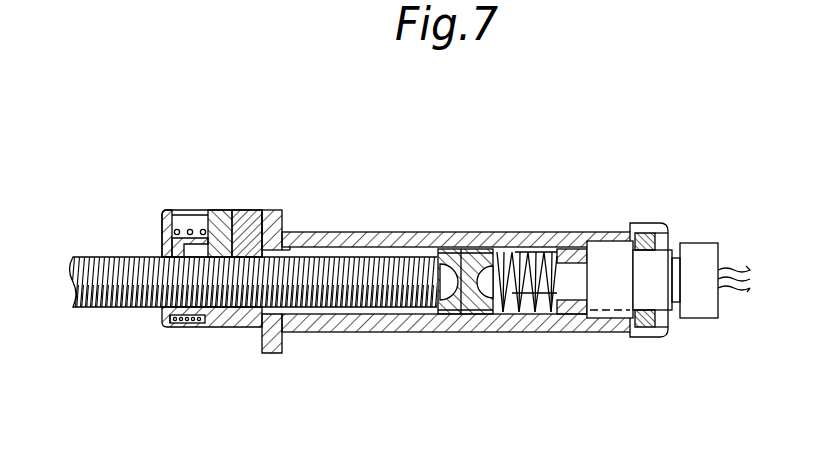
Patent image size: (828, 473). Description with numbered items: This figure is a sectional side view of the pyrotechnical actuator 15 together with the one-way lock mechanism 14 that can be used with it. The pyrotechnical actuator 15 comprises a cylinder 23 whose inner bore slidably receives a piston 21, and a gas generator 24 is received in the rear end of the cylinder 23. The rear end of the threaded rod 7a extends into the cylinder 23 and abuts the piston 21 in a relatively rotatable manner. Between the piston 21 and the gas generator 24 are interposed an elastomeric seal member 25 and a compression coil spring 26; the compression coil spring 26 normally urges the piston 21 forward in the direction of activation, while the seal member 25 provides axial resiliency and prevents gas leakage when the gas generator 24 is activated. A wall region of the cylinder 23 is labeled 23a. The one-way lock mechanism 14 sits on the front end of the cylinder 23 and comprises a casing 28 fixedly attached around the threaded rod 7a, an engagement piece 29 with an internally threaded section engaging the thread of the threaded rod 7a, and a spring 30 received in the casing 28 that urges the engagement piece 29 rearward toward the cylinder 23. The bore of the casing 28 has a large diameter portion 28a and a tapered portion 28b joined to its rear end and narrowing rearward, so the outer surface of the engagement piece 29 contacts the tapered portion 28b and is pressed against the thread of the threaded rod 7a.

The threaded rod 7a is at (100, 262).
The one-way lock mechanism 14 is at (182, 342).
The pyrotechnical actuator 15 is at (419, 136).
The piston 21 is at (447, 314).
The cylinder 23 is at (448, 232).
The tube wall opening 23a is at (343, 318).
The gas generator 24 is at (606, 252).
The elastomeric seal member 25 is at (563, 314).
The compression coil spring 26 is at (527, 267).
The casing 28 is at (248, 330).
The large diameter portion 28a is at (160, 232).
The tapered portion 28b is at (253, 230).
The engagement piece 29 is at (214, 235).
The spring 30 is at (195, 229).